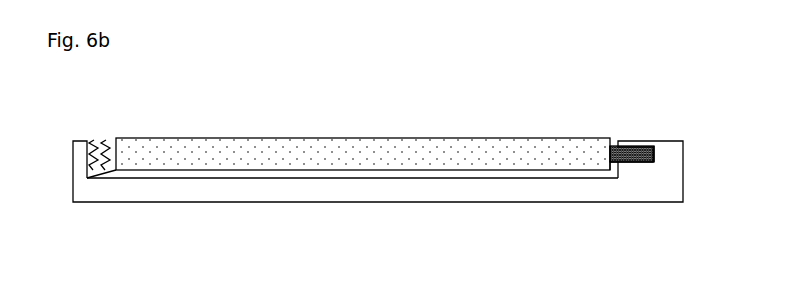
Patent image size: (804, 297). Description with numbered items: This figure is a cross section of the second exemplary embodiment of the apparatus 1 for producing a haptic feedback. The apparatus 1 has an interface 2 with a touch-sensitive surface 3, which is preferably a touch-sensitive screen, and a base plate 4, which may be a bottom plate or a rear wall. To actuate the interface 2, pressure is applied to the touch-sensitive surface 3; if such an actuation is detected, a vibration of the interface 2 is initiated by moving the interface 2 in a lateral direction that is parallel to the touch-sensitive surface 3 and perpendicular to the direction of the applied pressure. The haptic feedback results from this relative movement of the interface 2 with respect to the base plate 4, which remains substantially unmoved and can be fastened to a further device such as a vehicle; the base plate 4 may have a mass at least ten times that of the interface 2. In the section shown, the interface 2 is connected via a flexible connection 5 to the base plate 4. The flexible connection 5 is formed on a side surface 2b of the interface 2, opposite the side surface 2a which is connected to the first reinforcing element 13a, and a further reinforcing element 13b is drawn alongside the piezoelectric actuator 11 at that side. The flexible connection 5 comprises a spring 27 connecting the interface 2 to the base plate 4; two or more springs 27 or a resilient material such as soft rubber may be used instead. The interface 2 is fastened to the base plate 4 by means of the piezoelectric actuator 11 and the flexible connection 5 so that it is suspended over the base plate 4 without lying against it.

The apparatus 1 is at (357, 97).
The interface 2 is at (522, 157).
The side surface 2a is at (618, 170).
The side surface 2b is at (90, 177).
The touch-sensitive surface 3 is at (427, 137).
The base plate 4 is at (445, 186).
The flexible connection 5 is at (107, 126).
The piezoelectric actuator 11 is at (631, 147).
The first reinforcing element 13a is at (609, 143).
The second contact 13b is at (648, 147).
The spring 27 is at (97, 148).